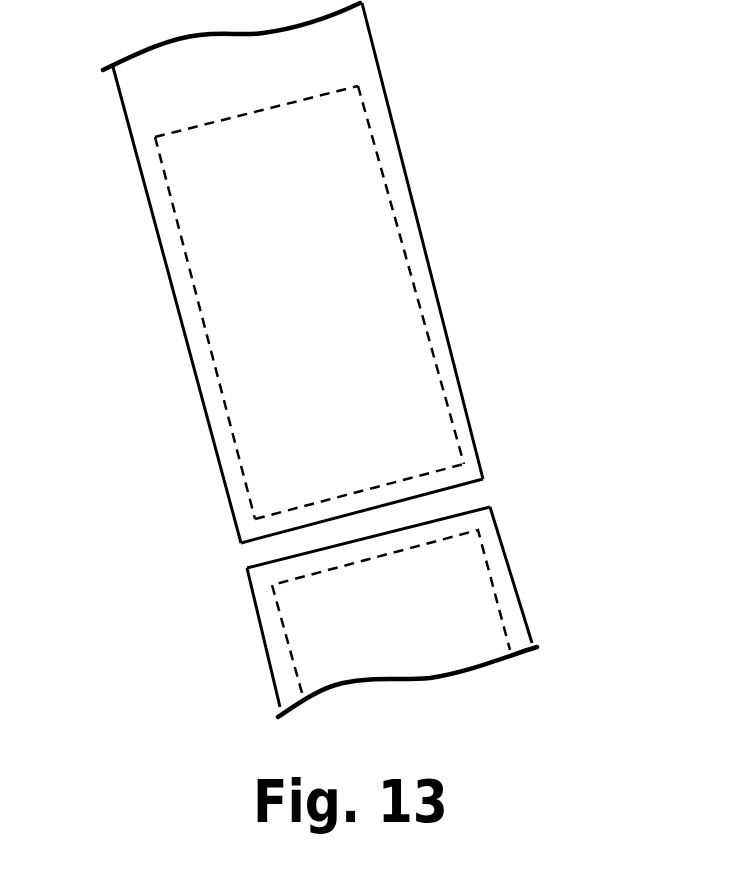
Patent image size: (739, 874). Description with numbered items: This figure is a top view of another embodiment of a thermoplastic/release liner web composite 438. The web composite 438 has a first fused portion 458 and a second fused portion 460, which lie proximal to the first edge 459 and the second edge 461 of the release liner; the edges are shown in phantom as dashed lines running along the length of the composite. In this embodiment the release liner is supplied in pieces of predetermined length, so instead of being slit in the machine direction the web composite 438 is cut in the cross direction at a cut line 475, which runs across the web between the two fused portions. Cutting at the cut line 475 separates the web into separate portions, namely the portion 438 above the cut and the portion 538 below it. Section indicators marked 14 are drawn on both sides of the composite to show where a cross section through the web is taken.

The thermoplastic/release liner web composite 438 is at (323, 160).
The first fused portion 458 is at (177, 257).
The first edge 459 is at (162, 182).
The second fused portion 460 is at (402, 213).
The second edge 461 is at (377, 152).
The cut line 475 is at (458, 483).
The separate portion 538 is at (455, 587).
The section line 14- 14 is at (240, 397).